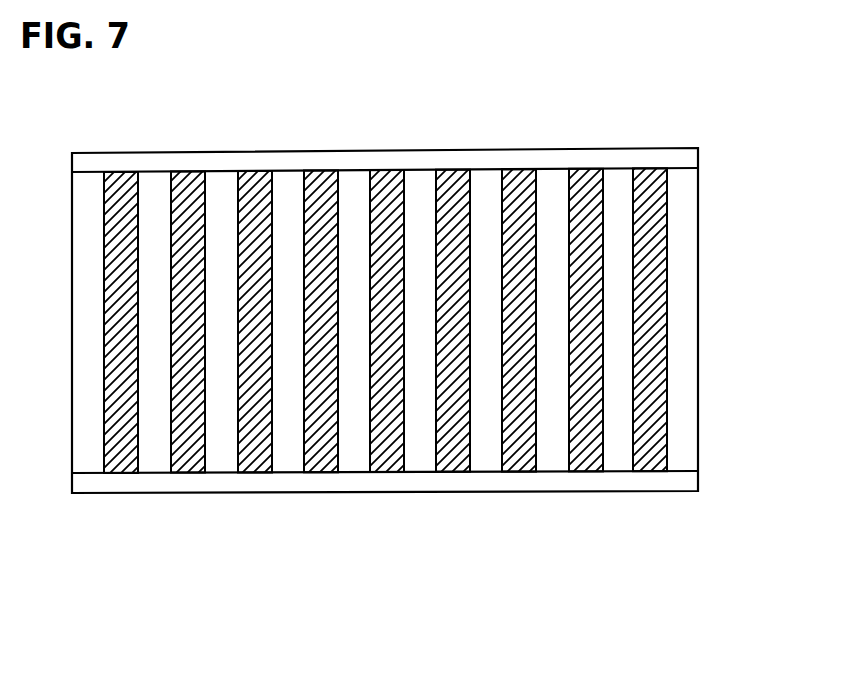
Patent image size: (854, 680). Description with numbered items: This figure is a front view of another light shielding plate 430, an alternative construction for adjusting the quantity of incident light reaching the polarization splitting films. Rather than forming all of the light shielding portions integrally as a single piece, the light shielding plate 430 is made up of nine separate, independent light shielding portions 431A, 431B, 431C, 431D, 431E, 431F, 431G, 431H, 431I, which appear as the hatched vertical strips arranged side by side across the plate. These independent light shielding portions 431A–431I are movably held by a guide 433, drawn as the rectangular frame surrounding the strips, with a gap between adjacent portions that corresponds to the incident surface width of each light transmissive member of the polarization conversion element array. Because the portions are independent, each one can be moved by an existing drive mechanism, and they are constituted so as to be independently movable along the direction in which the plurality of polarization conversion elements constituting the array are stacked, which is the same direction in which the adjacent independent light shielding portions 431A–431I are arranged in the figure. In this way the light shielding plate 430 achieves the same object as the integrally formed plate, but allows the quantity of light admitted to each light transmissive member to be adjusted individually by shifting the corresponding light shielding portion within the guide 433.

The light shielding plate 430 is at (440, 404).
The guide 433 is at (698, 275).
The independent light shielding portion 431A is at (121, 473).
The independent light shielding portion 431B is at (187, 473).
The independent light shielding portion 431C is at (260, 472).
The independent light shielding portion 431D is at (327, 472).
The independent light shielding portion 431E is at (388, 472).
The independent light shielding portion 431F is at (453, 472).
The independent light shielding portion 431G is at (523, 471).
The independent light shielding portion 431H is at (587, 471).
The independent light shielding portion 431I is at (662, 367).